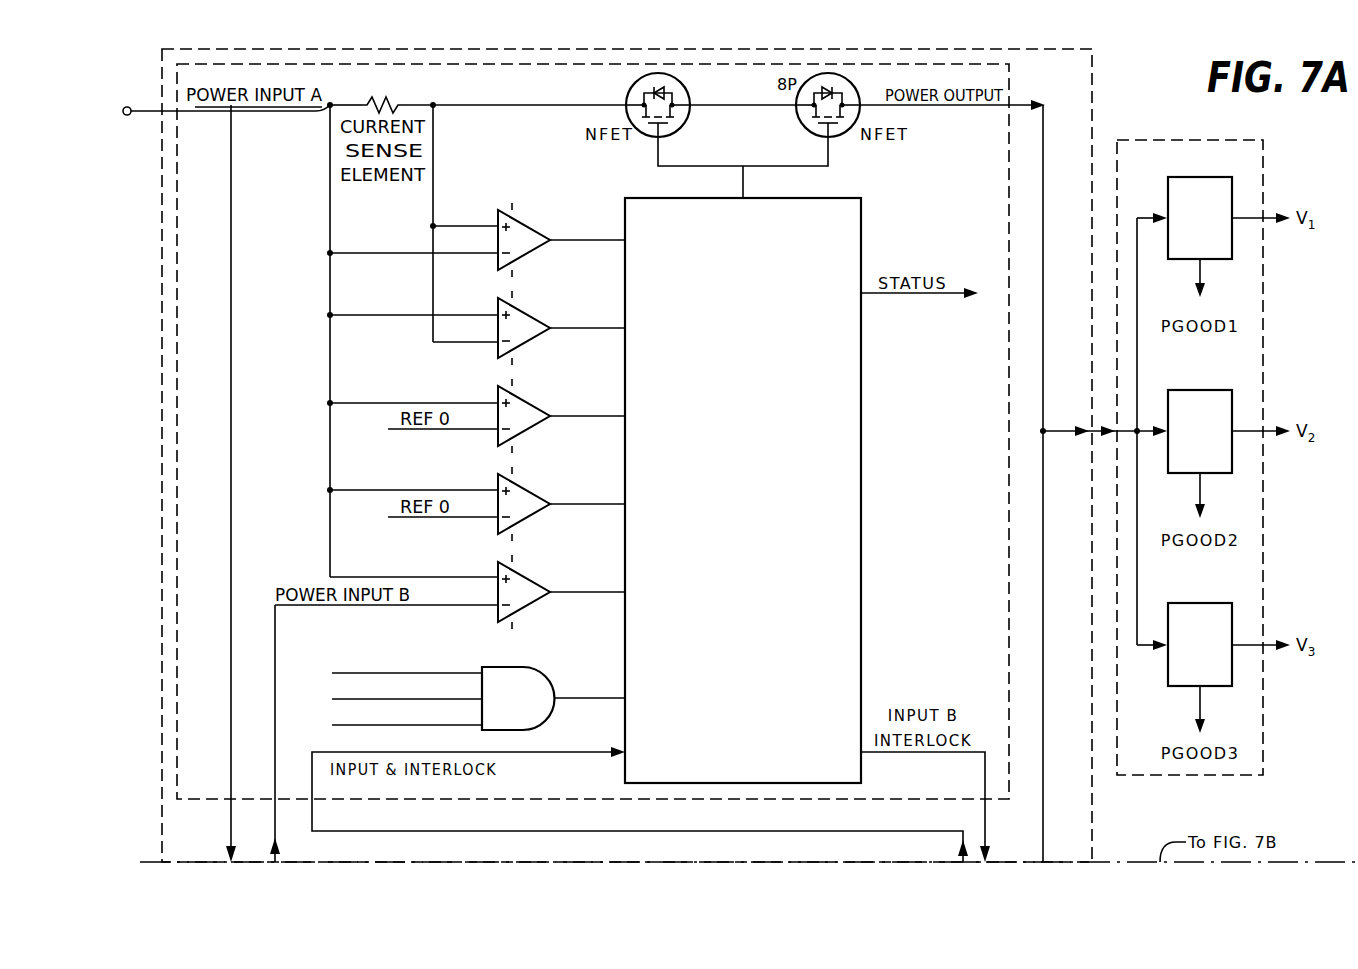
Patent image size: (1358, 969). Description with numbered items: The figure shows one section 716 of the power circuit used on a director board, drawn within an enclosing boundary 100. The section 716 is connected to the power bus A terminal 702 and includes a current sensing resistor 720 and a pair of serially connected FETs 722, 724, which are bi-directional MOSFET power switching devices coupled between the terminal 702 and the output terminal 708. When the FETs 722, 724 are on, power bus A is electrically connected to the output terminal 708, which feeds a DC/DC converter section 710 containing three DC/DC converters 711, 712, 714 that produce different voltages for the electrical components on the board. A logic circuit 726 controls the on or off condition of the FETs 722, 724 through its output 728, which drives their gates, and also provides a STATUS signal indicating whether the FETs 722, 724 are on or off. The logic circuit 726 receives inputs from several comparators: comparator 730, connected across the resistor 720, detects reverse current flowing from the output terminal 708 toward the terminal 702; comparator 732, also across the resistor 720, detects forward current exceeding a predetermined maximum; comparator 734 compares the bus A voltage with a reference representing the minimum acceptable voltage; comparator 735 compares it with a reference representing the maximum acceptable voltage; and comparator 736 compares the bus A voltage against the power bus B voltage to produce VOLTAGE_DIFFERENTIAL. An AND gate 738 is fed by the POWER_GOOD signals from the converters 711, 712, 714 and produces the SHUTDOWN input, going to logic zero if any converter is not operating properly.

The power supply system 100 is at (1092, 105).
The power bus A terminal 702 is at (128, 106).
The output terminal 708 is at (1046, 429).
The DC/DC converter section 710 is at (1160, 140).
The DC/DC converter 711 is at (1180, 177).
The DC/DC converter 712 is at (1183, 390).
The DC/DC converter 714 is at (1183, 603).
The section 716 is at (1009, 88).
The current sensing resistor 720 is at (390, 103).
The FET 722 is at (682, 128).
The FET 724 is at (805, 128).
The logic circuit 726 is at (861, 452).
The output 728 is at (745, 187).
The comparator 730 is at (528, 340).
The comparator 732 is at (528, 252).
The comparator 734 is at (528, 428).
The comparator 735 is at (528, 516).
The comparator 736 is at (528, 604).
The AND gate 738 is at (540, 668).